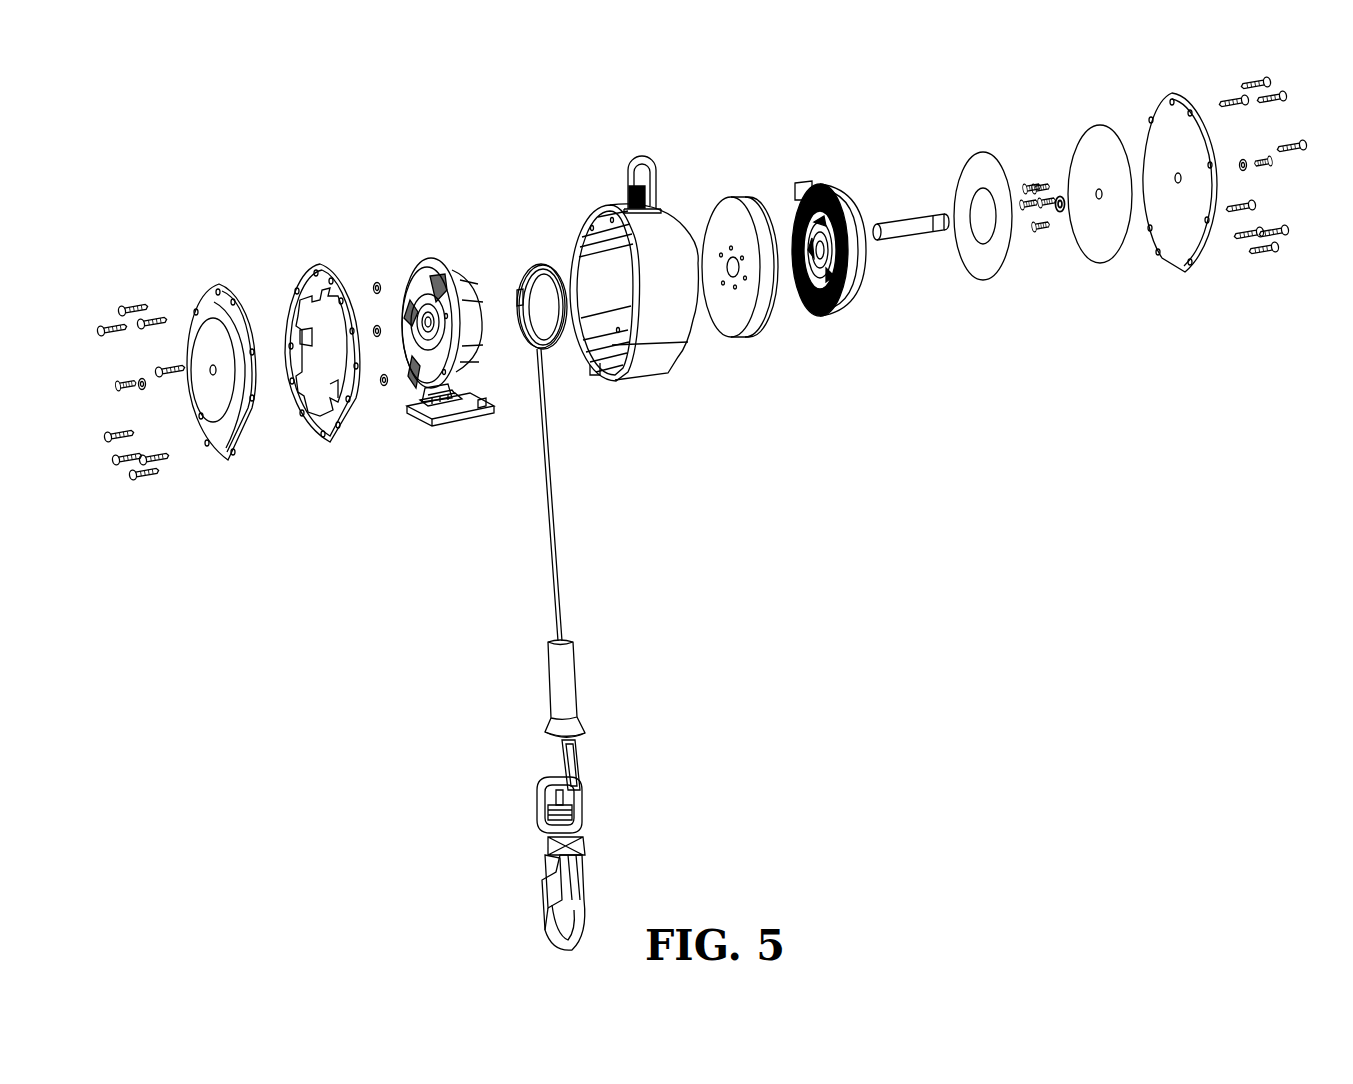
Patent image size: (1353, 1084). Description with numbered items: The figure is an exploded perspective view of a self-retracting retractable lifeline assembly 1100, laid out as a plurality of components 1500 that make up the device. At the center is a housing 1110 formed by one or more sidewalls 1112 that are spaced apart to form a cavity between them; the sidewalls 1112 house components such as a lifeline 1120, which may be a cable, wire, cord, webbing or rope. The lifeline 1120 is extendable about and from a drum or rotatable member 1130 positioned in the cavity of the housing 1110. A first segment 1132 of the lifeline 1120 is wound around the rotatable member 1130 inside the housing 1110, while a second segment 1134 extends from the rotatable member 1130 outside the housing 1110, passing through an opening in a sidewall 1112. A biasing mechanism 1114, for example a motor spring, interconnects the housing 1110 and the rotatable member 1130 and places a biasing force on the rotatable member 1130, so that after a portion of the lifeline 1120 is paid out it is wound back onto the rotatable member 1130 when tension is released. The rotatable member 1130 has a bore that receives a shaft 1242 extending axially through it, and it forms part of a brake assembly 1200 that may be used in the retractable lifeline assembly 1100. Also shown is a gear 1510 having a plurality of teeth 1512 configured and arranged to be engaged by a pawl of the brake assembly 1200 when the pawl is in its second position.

The retractable lifeline assembly 1100 is at (275, 568).
The housing 1110 is at (620, 170).
The sidewall 1112 is at (221, 306).
The biasing mechanism 1114 is at (853, 300).
The lifeline 1120 is at (528, 592).
The rotatable member 1130 is at (467, 283).
The first segment 1132 is at (541, 259).
The second segment 1134 is at (556, 481).
The brake assembly 1200 is at (434, 256).
The shaft 1242 is at (912, 229).
The components 1500 is at (416, 473).
The gear 1510 is at (322, 251).
The teeth 1512 is at (312, 378).